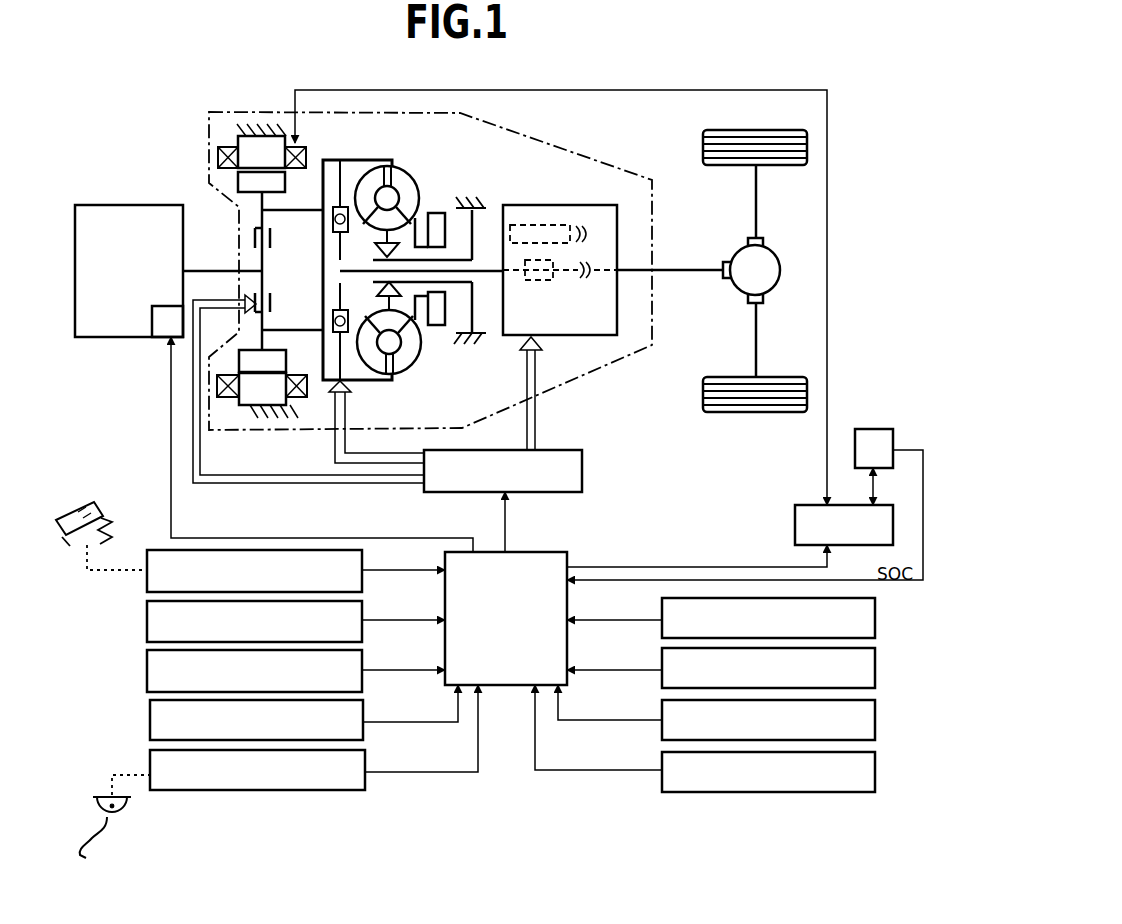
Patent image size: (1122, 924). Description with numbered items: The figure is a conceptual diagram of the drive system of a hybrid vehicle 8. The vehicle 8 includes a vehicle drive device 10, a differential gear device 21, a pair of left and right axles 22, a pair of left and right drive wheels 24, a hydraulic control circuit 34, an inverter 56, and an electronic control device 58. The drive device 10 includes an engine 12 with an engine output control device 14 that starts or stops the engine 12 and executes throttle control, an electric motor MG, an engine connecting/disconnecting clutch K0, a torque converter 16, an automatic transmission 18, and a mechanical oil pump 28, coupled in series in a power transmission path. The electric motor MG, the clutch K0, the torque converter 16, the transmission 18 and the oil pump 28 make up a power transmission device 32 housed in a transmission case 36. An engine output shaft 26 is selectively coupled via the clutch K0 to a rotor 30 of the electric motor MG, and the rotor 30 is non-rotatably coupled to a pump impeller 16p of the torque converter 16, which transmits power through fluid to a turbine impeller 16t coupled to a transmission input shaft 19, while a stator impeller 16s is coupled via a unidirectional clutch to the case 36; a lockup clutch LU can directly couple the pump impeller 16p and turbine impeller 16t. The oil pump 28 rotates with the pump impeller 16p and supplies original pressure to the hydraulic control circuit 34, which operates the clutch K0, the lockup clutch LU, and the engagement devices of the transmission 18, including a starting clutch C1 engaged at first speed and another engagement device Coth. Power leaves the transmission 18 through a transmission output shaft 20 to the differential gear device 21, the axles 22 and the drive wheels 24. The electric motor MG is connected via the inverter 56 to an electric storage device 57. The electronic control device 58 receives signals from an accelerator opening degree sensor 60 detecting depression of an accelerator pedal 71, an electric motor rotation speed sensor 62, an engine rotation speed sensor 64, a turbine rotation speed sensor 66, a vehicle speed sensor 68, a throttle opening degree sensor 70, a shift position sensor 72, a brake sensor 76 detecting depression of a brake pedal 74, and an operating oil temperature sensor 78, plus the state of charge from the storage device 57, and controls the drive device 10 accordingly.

The hybrid vehicle 8 is at (906, 100).
The vehicle drive device 10 is at (103, 157).
The engine 12 is at (95, 212).
The engine output control device 14 is at (160, 340).
The torque converter 16 is at (413, 267).
The pump impeller 16p is at (413, 355).
The turbine impeller 16t is at (373, 357).
The stator impeller 16s is at (412, 312).
The automatic transmission 18 is at (603, 210).
The transmission input shaft 19 is at (490, 266).
The transmission output shaft 20 is at (628, 268).
The differential gear device 21 is at (770, 258).
The axles 22 is at (756, 201).
The drive wheels 24 is at (703, 146).
The engine output shaft 26 is at (206, 268).
The mechanical oil pump 28 is at (437, 213).
The rotor 30 is at (281, 185).
The power transmission device 32 is at (556, 130).
The hydraulic control circuit 34 is at (582, 461).
The transmission case 36 is at (268, 124).
The inverter 56 is at (795, 520).
The electric storage device 57 is at (876, 430).
The electronic control device 58 is at (555, 554).
The accelerator opening degree sensor 60 is at (150, 581).
The electric motor rotation speed sensor 62 is at (150, 619).
The engine rotation speed sensor 64 is at (150, 669).
The turbine rotation speed sensor 66 is at (152, 720).
The vehicle speed sensor 68 is at (876, 611).
The throttle opening degree sensor 70 is at (876, 661).
The accelerator pedal 71 is at (105, 517).
The shift position sensor 72 is at (876, 721).
The brake pedal 74 is at (105, 836).
The brake sensor 76 is at (152, 760).
The operating oil temperature sensor 78 is at (876, 772).
The electric motor MG is at (232, 140).
The lockup clutch LU is at (350, 172).
The engine connecting/disconnecting clutch K0 is at (270, 300).
The other engagement device Coth is at (558, 225).
The starting clutch C1 is at (541, 282).